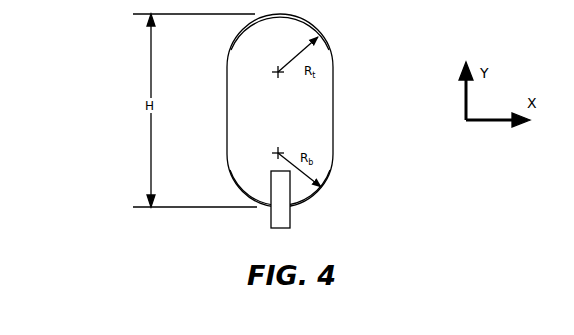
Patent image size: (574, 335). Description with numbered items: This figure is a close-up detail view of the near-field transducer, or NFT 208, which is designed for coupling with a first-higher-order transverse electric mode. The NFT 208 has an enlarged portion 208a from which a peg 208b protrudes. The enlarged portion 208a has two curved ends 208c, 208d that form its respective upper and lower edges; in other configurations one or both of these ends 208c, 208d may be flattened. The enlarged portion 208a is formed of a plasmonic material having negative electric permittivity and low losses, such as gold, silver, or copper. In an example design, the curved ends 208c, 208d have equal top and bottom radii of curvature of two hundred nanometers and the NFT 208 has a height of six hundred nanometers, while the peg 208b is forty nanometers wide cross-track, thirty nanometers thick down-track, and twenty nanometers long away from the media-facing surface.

The near-field transducer 208 is at (220, 122).
The enlarged portion 208a is at (333, 89).
The peg 208b is at (271, 222).
The curved end 208c is at (328, 44).
The curved end 208d is at (321, 189).